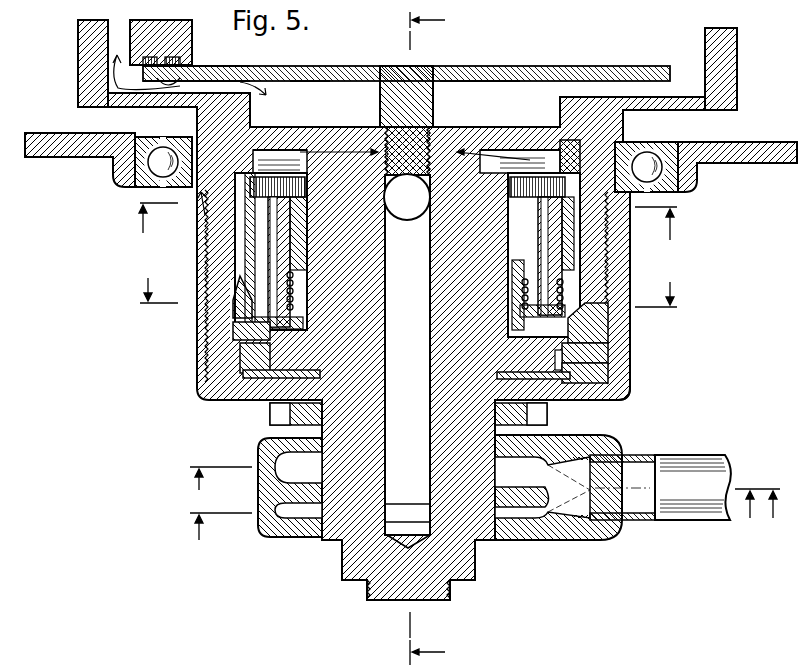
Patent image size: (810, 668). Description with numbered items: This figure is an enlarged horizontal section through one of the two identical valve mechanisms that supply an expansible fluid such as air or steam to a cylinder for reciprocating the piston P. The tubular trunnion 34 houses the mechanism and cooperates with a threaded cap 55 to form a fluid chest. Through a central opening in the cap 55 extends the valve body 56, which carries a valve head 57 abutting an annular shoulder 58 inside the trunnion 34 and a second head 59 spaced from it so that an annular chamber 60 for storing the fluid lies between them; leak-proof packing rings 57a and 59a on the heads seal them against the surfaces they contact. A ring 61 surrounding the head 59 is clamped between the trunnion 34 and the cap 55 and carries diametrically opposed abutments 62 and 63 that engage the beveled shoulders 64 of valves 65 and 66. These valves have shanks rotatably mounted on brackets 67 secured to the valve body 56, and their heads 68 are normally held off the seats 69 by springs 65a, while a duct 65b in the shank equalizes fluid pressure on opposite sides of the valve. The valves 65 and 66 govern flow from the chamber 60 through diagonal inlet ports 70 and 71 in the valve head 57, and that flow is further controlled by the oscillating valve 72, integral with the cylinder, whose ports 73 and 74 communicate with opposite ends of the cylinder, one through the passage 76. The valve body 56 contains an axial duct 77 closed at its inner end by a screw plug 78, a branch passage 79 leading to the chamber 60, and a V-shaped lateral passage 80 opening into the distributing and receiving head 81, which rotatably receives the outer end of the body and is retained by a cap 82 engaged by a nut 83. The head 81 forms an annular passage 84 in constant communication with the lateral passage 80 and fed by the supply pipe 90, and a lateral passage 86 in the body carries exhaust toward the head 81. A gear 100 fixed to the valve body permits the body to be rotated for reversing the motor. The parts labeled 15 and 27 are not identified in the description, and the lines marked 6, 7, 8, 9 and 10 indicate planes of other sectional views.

The piston P is at (160, 35).
The plate 15 is at (205, 68).
The support arm 27 is at (72, 157).
The trunnion 34 is at (593, 282).
The threaded cap 55 is at (628, 392).
The valve body 56 is at (338, 518).
The valve head 57 is at (481, 140).
The packing ring 57a is at (580, 143).
The annular shoulder 58 is at (540, 133).
The second head 59 is at (550, 394).
The packing ring 59a is at (607, 362).
The annular chamber 60 is at (576, 298).
The ring 61 is at (576, 353).
The abutment 62 is at (247, 310).
The abutment 63 is at (572, 318).
The beveled shoulder 64 is at (232, 330).
The valve 65 is at (240, 278).
The spring 65a is at (527, 282).
The duct 65b is at (577, 258).
The valve 66 is at (548, 248).
The bracket 67 is at (562, 232).
The valve head 68 is at (248, 222).
The valve seat 69 is at (200, 210).
The inlet port 70 is at (322, 150).
The inlet port 71 is at (525, 127).
The oscillating valve 72 is at (345, 67).
The port 73 is at (302, 70).
The port 74 is at (480, 67).
The passage 76 is at (642, 76).
The axial duct 77 is at (407, 361).
The screw plug 78 is at (399, 130).
The branch passage 79 is at (407, 197).
The lateral passage 80 is at (401, 513).
The distributing and receiving head 81 is at (551, 541).
The cap 82 is at (478, 570).
The nut 83 is at (452, 594).
The annular passage 84 is at (283, 516).
The lateral passage 86 is at (276, 464).
The pipe 90 is at (695, 522).
The gear 100 is at (548, 418).
The section line 6 is at (480, 525).
The section line 7 is at (481, 504).
The section line 8 is at (436, 338).
The section line 9 is at (407, 229).
The section line 10 is at (408, 283).